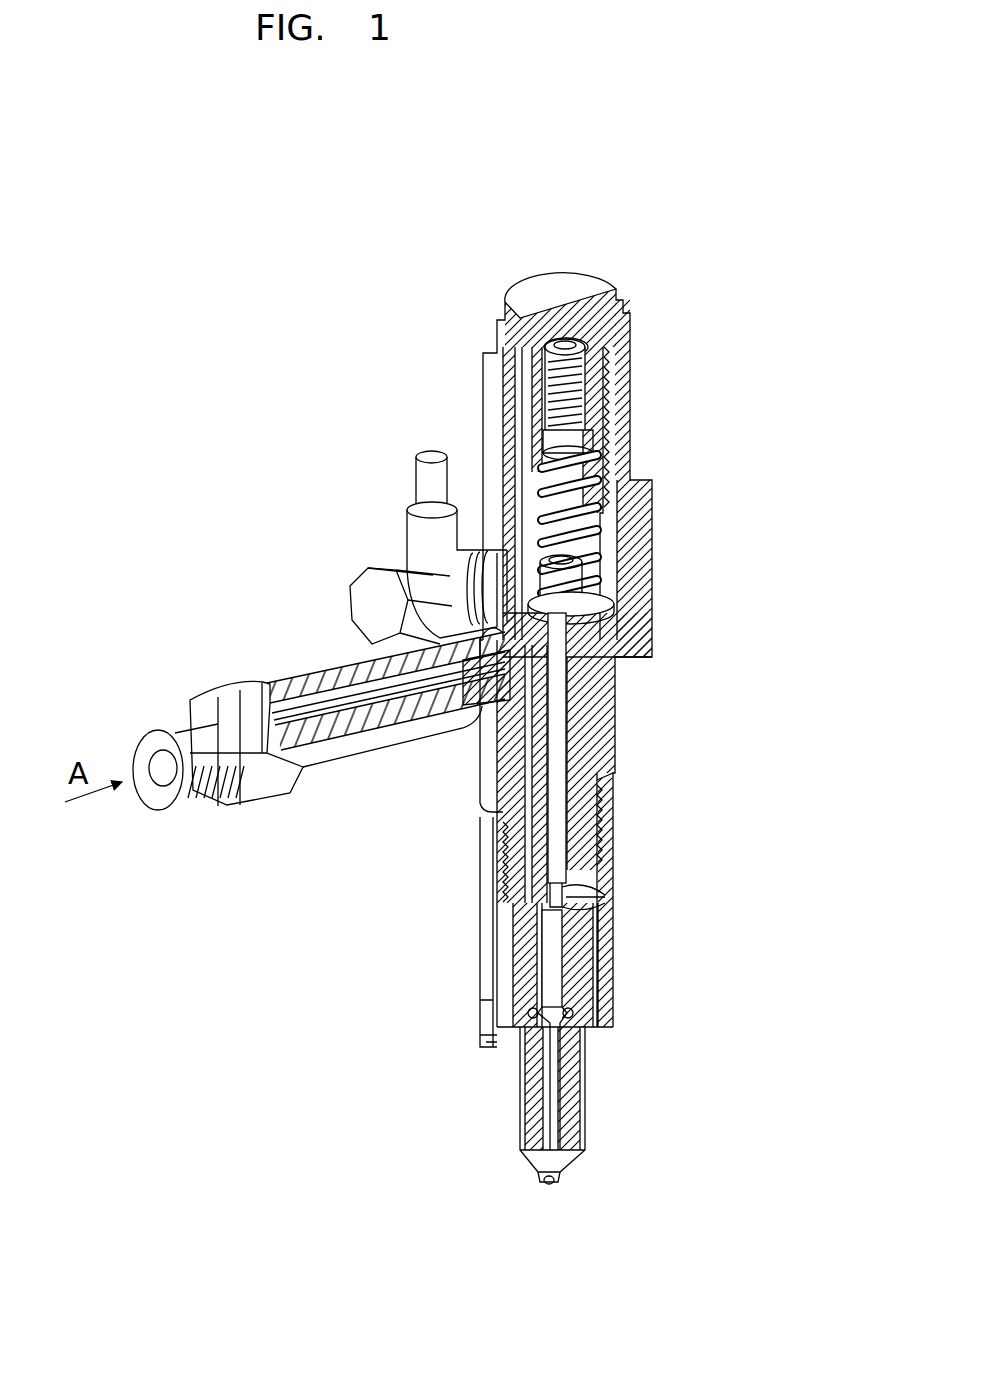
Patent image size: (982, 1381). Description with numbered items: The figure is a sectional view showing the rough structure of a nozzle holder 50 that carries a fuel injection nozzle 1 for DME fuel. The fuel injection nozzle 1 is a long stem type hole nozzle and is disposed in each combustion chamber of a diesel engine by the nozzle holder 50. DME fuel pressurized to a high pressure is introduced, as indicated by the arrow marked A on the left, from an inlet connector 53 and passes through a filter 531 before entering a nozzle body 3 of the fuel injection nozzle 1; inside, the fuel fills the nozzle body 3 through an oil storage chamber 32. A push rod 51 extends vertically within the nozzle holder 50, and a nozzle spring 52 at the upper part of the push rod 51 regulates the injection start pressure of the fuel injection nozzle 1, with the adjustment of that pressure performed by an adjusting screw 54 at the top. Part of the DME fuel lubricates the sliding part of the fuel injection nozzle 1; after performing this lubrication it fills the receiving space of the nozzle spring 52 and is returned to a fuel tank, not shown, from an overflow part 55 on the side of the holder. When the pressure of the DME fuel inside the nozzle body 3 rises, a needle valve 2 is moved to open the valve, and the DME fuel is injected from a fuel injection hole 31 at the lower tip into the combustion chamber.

The fuel injection nozzle 1 is at (600, 1088).
The needle valve 2 is at (555, 958).
The nozzle body 3 is at (587, 1130).
The fuel injection hole 31 is at (549, 1186).
The oil storage chamber 32 is at (516, 1046).
The nozzle holder 50 is at (660, 612).
The push rod 51 is at (562, 718).
The nozzle spring 52 is at (600, 548).
The inlet connector 53 is at (230, 687).
The filter 531 is at (330, 700).
The adjusting screw 54 is at (585, 412).
The overflow part 55 is at (408, 536).